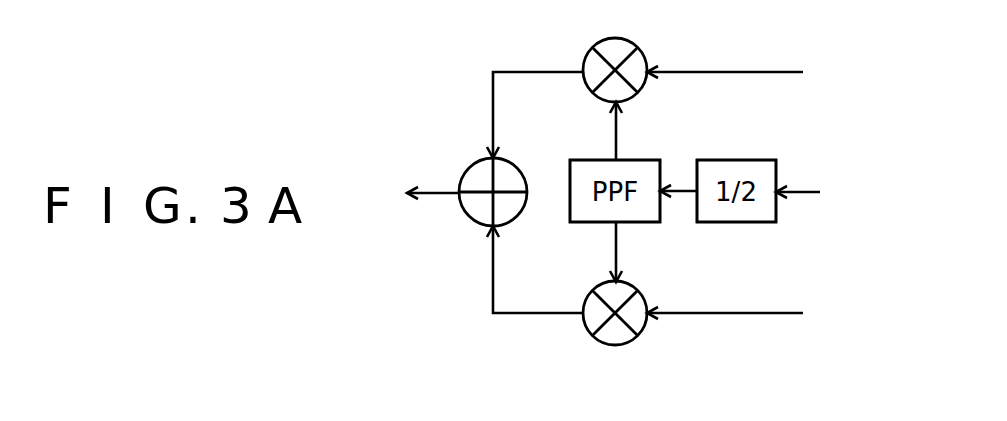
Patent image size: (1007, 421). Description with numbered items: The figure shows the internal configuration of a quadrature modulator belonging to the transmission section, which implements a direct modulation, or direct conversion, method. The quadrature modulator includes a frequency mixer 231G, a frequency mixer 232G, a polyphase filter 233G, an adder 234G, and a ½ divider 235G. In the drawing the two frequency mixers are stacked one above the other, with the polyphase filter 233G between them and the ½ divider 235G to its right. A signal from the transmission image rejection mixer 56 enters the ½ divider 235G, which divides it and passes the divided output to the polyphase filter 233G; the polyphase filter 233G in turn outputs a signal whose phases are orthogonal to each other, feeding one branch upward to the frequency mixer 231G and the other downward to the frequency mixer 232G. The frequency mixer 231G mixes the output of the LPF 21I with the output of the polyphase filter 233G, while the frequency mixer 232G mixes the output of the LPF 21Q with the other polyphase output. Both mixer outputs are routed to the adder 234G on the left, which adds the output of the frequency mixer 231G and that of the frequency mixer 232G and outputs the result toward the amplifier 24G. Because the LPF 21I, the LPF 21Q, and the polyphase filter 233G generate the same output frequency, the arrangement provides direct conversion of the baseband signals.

The frequency mixer 231G is at (637, 46).
The frequency mixer 232G is at (637, 337).
The polyphase filter 233G is at (661, 159).
The adder 234G is at (470, 218).
The ½ divider 235G is at (777, 159).
The LPF 21I is at (748, 72).
The LPF 21Q is at (756, 317).
The amplifier 24G is at (397, 193).
The transmission image rejection mixer 56 is at (818, 191).